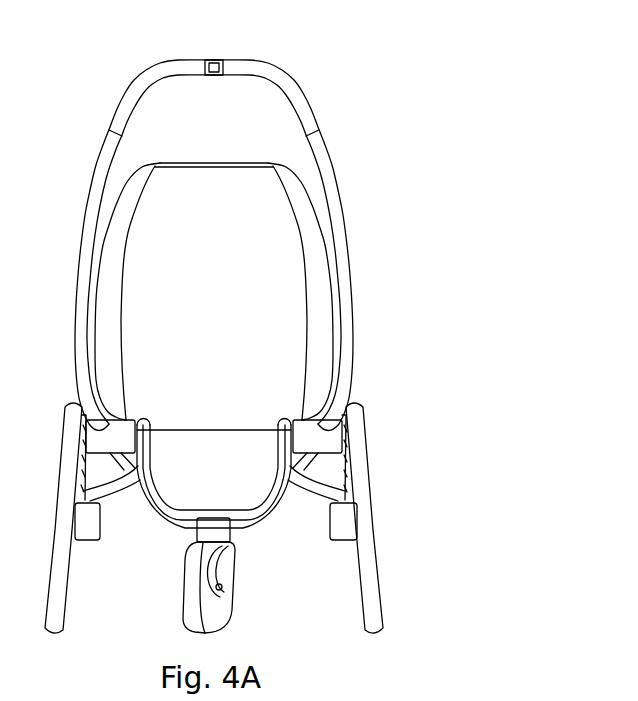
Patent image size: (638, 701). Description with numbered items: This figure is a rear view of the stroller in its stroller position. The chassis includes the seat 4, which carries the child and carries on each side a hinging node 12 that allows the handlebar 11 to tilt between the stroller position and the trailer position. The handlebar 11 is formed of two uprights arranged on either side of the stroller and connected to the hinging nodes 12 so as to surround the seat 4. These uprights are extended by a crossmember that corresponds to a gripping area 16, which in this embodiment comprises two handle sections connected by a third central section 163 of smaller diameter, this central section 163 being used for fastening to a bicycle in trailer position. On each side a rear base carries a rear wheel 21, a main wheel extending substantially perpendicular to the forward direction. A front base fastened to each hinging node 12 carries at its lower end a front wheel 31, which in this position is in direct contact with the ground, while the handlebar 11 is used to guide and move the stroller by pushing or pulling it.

The third central section 163 is at (213, 60).
The gripping area 16 is at (292, 93).
The seat 4 is at (278, 267).
The handlebar 11 is at (356, 347).
The hinging node 12 is at (332, 440).
The rear wheel 21 is at (372, 558).
The front wheel 31 is at (222, 607).